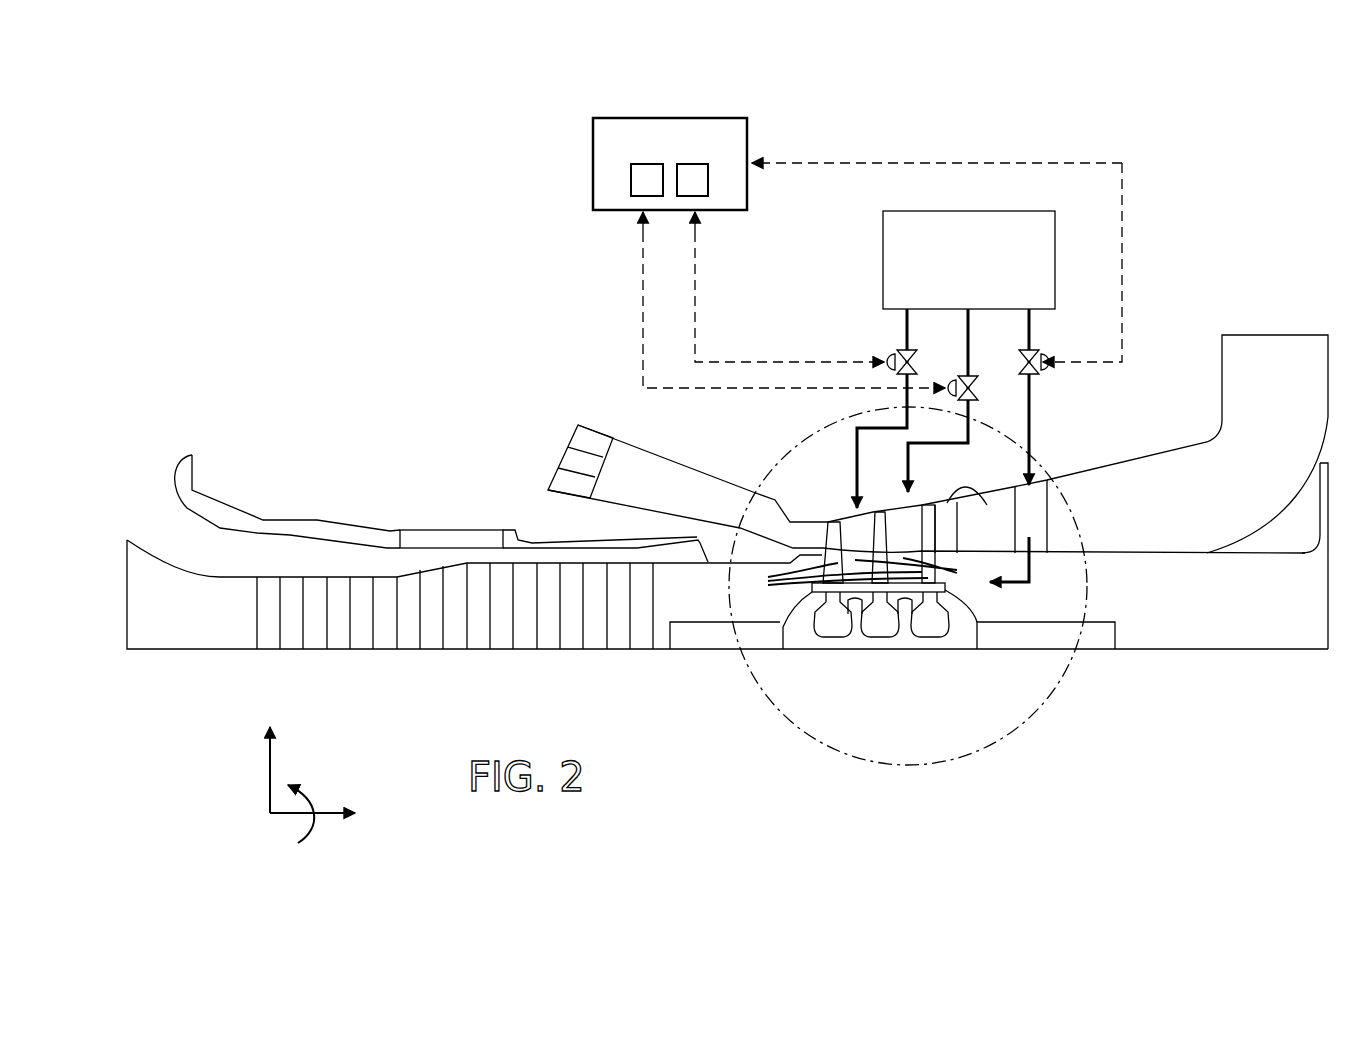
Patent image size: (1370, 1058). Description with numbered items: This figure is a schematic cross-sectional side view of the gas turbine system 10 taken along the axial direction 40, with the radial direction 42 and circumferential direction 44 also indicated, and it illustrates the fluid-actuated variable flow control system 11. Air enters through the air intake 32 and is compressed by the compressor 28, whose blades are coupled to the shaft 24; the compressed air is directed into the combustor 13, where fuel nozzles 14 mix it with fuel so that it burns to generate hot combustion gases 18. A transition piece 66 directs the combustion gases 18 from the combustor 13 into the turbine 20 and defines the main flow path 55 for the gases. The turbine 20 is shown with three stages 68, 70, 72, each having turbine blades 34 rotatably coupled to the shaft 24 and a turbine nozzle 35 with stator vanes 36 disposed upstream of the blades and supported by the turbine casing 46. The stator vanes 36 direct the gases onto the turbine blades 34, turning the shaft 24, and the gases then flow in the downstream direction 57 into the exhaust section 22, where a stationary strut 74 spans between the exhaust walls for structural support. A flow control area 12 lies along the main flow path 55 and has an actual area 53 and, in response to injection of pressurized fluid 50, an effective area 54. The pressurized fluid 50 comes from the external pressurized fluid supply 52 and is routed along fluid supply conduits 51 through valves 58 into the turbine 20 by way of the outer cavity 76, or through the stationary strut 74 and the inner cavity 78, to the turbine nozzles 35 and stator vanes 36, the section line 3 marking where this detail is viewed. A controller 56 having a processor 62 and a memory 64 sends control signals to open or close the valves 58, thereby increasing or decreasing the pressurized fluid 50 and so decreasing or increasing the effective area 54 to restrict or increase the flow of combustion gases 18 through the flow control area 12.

The section line 3 is at (815, 440).
The gas turbine system 10 is at (598, 383).
The fluid-actuated variable flow control system 11 is at (1188, 160).
The flow control area 12 is at (820, 478).
The combustor 13 is at (641, 437).
The fuel nozzle 14 is at (551, 484).
The combustion gases 18 is at (716, 502).
The turbine 20 is at (802, 772).
The exhaust section 22 is at (975, 772).
The shaft 24 is at (811, 592).
The compressor 28 is at (549, 525).
The air intake 32 is at (188, 543).
The turbine blades 34 is at (831, 580).
The turbine nozzle 35 is at (845, 516).
The stator vanes 36 is at (918, 572).
The axial direction 40 is at (290, 815).
The radial direction 42 is at (268, 777).
The circumferential direction 44 is at (302, 790).
The turbine casing 46 is at (1078, 444).
The pressurized fluid 50 is at (907, 322).
The fluid supply conduit 51 is at (907, 335).
The external pressurized fluid supply 52 is at (967, 211).
The actual area 53 is at (905, 520).
The effective area 54 is at (898, 485).
The main flow path 55 is at (778, 530).
The controller 56 is at (593, 150).
The downstream direction 57 is at (1070, 866).
The valve 58 is at (893, 358).
The processor 62 is at (631, 180).
The memory 64 is at (708, 181).
The transition piece 66 is at (757, 520).
The first turbine stage 68 is at (803, 657).
The second turbine stage 70 is at (855, 657).
The third turbine stage 72 is at (905, 657).
The stationary strut 74 is at (1048, 530).
The outer cavity 76 is at (833, 512).
The inner cavity 78 is at (986, 598).